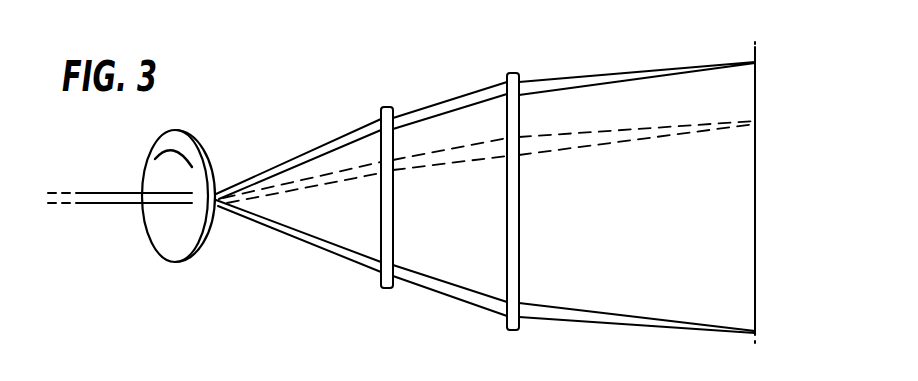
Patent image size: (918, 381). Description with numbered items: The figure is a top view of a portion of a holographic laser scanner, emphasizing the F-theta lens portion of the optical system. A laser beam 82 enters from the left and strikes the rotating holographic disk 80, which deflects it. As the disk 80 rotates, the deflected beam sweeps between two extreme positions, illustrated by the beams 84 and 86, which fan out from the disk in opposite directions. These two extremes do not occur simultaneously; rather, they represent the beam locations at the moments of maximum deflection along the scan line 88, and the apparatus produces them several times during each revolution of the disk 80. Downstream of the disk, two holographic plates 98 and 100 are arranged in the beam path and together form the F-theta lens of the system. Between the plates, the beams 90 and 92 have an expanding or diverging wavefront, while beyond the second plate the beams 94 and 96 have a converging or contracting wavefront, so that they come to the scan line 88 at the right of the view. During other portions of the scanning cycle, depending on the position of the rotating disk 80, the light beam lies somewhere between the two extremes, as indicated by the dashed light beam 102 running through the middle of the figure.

The rotating holographic disk 80 is at (201, 141).
The laser beam 82 is at (97, 192).
The beam 84 is at (304, 155).
The beam 86 is at (294, 243).
The scan line 88 is at (757, 237).
The beam 90 is at (452, 98).
The beam 92 is at (428, 292).
The beam 94 is at (638, 72).
The beam 96 is at (612, 327).
The holographic plate 98 is at (388, 106).
The holographic plate 100 is at (519, 73).
The dashed light beam 102 is at (585, 130).